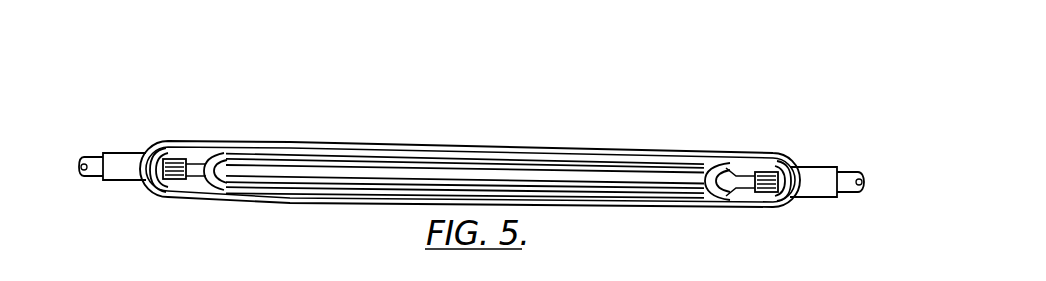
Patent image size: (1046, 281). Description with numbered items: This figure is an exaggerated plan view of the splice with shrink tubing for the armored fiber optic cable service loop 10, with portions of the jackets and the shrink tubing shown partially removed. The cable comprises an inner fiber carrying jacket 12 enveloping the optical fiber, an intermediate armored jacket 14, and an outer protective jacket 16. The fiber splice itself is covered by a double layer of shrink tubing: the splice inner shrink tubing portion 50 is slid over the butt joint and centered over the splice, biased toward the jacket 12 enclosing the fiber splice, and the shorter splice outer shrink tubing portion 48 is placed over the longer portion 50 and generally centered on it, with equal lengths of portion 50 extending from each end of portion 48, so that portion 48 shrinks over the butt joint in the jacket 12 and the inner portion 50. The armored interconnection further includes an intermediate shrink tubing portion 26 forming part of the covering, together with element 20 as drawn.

The armored fiber optic cable service loop 10 is at (378, 217).
The inner fiber carrying jacket 12 is at (362, 168).
The intermediate armored jacket 14 is at (177, 159).
The outer protective jacket 16 is at (88, 156).
The inner sleeve 20 is at (485, 155).
The intermediate shrink tubing portion 26 is at (827, 167).
The splice outer shrink tubing portion 48 is at (703, 197).
The splice inner shrink tubing portion 50 is at (722, 197).